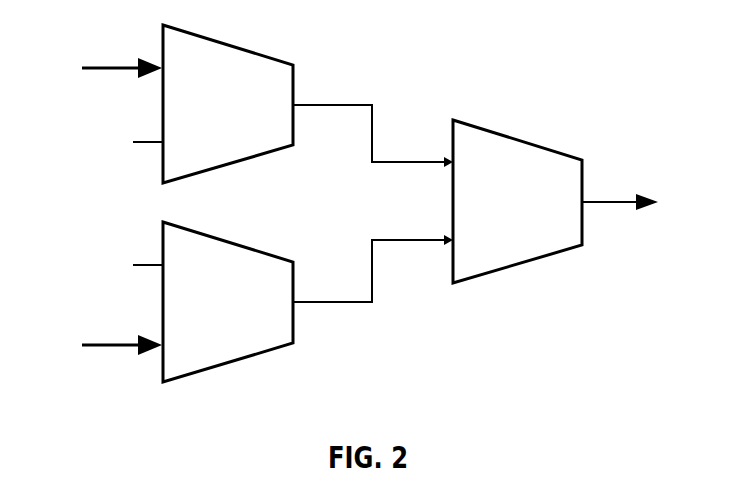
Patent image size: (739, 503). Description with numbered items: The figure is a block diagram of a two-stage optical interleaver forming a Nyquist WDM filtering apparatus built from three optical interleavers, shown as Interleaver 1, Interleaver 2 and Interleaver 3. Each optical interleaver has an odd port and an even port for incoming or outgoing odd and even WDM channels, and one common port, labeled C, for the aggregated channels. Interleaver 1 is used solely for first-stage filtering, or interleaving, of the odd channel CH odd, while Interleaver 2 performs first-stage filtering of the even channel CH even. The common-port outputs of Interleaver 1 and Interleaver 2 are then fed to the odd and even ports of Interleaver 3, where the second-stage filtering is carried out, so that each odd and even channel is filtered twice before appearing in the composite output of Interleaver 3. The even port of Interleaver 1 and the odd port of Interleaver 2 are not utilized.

The interleaver 1 is at (245, 104).
The interleaver 2 is at (245, 302).
The interleaver 3 is at (555, 201).